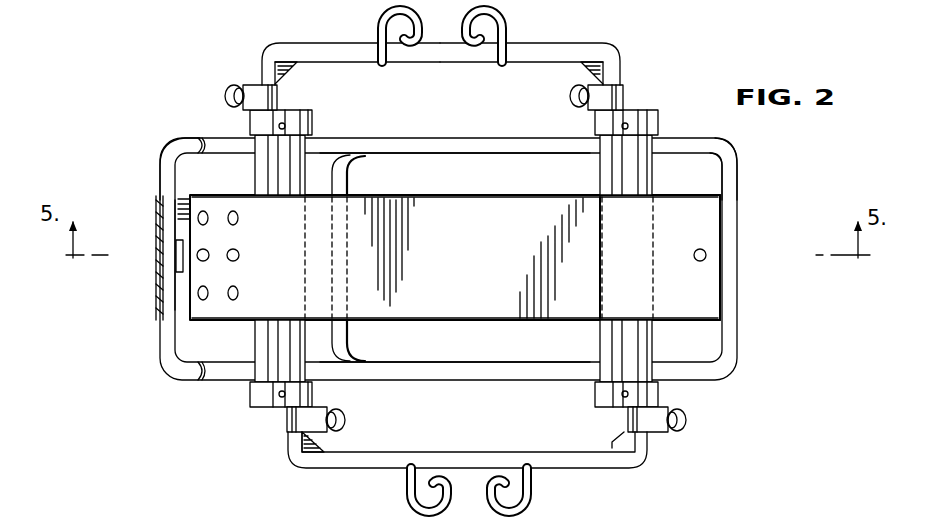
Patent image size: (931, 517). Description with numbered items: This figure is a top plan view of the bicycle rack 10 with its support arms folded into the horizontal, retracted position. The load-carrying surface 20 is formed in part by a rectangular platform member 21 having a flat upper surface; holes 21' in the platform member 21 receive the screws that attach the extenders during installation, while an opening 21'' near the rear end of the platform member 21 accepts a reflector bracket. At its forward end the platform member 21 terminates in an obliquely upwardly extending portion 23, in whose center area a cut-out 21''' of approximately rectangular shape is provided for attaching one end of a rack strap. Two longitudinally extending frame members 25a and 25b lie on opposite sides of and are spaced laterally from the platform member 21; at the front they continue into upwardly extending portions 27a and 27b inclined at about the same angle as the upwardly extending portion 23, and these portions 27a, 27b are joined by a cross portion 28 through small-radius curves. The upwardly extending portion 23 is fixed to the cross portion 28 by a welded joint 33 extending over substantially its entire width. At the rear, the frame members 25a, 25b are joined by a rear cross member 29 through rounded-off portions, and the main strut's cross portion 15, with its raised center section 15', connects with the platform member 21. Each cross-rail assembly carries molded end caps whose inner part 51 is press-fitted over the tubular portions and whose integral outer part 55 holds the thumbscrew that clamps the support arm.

The bicycle rack 10 is at (669, 46).
The cross portion 15 is at (455, 276).
The raised section 15' is at (465, 258).
The load-carrying surface 20 is at (684, 327).
The platform member 21 is at (479, 234).
The holes 21' is at (246, 255).
The opening 21'' is at (678, 241).
The cut-out 21''' is at (137, 234).
The obliquely upwardly extending portion 23 is at (183, 312).
The longitudinally extending frame member 25a is at (506, 382).
The longitudinally extending frame member 25b is at (412, 148).
The upwardly extending portion 27a is at (192, 372).
The upwardly extending portion 27b is at (186, 147).
The cross portion 28 is at (165, 190).
The rear cross member 29 is at (734, 257).
The welded joint 33 is at (158, 282).
The inner part 51 is at (594, 400).
The outer part 55 is at (656, 430).